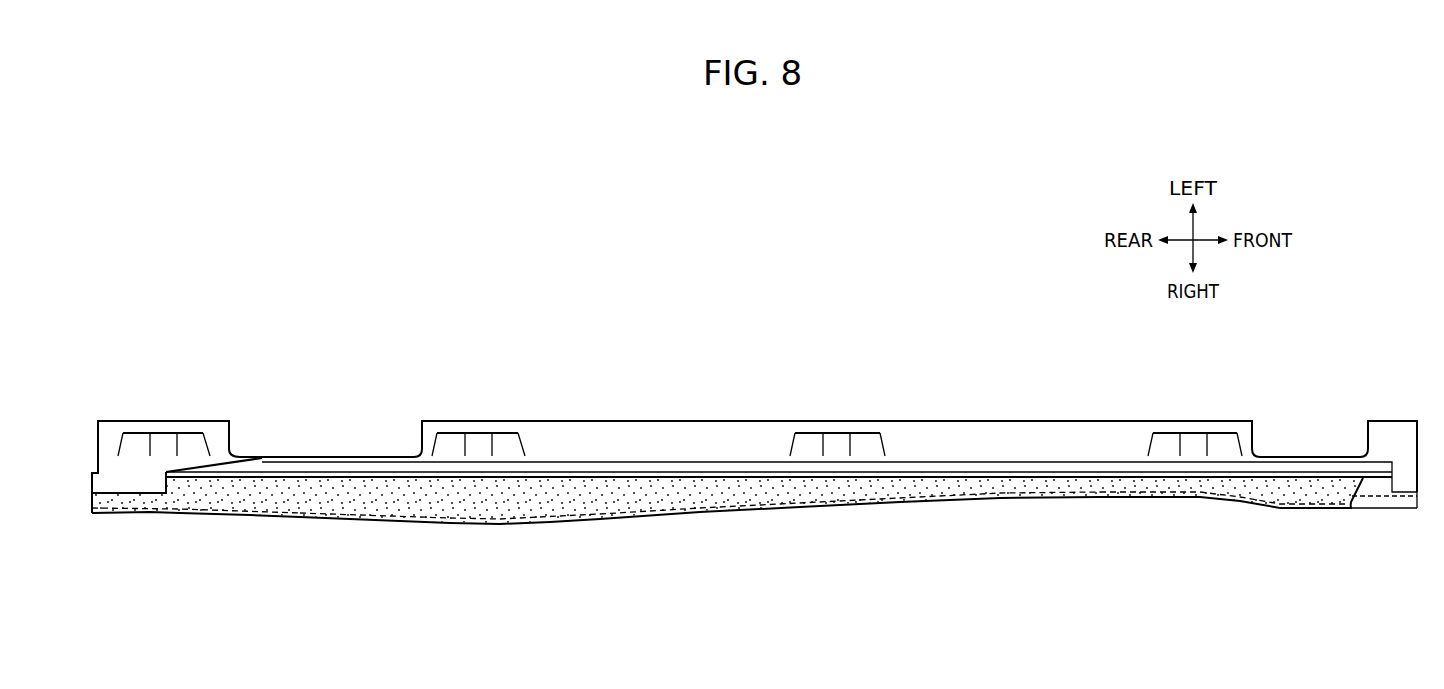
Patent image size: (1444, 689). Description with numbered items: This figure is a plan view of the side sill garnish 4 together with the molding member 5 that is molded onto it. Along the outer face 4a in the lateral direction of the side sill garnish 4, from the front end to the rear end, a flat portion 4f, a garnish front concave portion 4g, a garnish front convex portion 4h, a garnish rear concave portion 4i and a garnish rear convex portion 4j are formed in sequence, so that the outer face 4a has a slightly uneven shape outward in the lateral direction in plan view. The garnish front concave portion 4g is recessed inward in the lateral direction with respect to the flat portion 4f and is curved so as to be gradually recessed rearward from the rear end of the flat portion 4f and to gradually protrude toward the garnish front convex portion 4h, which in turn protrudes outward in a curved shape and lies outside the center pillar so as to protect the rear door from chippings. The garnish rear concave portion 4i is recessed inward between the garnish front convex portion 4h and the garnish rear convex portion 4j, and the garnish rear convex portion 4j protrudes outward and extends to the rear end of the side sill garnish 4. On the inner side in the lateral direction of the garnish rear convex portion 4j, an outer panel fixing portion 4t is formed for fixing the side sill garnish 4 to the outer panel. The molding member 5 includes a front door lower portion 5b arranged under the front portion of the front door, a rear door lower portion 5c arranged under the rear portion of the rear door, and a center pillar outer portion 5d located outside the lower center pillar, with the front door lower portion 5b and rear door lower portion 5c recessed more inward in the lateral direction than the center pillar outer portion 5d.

The side sill garnish 4 is at (642, 414).
The outer panel fixing portion 4t is at (118, 492).
The garnish rear convex portion 4j is at (115, 515).
The garnish rear concave portion 4i is at (217, 515).
The garnish front convex portion 4h is at (458, 525).
The outer face 4a is at (588, 527).
The garnish front concave portion 4g is at (1178, 500).
The flat portion 4f is at (1315, 510).
The molding member 5 is at (668, 523).
The rear door lower portion 5c is at (238, 515).
The center pillar outer portion 5d is at (485, 525).
The front door lower portion 5b is at (1170, 500).